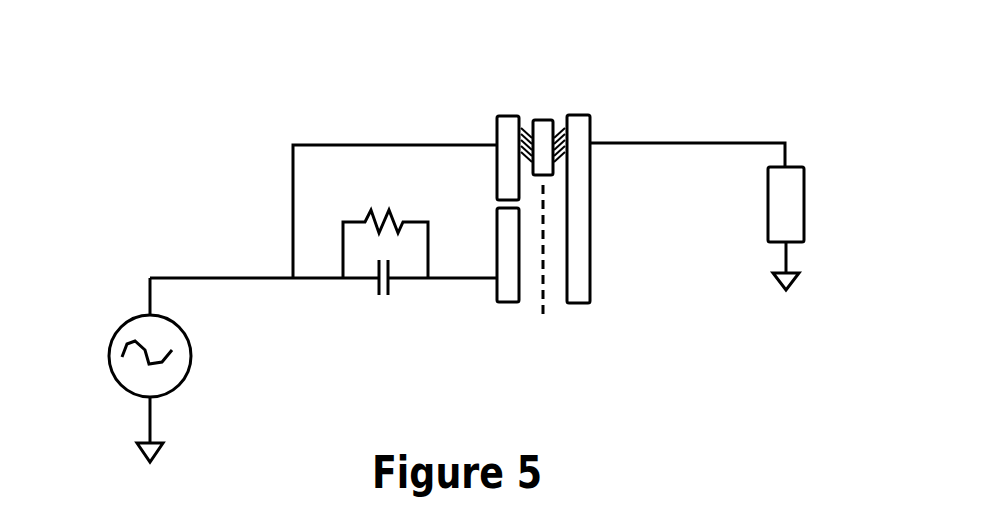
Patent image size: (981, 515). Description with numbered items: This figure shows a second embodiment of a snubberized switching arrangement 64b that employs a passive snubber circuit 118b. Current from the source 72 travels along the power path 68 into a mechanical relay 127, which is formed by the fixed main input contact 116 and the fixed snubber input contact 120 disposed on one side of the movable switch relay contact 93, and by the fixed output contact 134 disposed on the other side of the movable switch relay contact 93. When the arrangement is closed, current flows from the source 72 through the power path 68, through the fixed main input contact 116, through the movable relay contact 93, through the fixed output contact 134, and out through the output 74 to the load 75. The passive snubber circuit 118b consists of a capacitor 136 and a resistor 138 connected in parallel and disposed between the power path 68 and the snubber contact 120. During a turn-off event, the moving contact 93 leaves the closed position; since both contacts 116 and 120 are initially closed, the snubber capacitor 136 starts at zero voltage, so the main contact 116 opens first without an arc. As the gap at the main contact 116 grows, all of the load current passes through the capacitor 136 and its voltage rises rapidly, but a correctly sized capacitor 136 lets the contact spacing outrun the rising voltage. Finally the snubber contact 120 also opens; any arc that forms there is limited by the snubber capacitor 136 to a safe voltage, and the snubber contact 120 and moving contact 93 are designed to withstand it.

The snubberized switching arrangement 64b is at (283, 99).
The power path 68 is at (224, 278).
The source 72 is at (101, 300).
The passive snubber circuit 118b is at (362, 304).
The resistor 138 is at (392, 202).
The capacitor 136 is at (385, 294).
The fixed main input contact 116 is at (508, 125).
The fixed snubber input contact 120 is at (507, 302).
The movable switch relay contact 93 is at (543, 120).
The fixed output contact 134 is at (582, 128).
The mechanical relay 127 is at (616, 333).
The output 74 is at (739, 143).
The load 75 is at (785, 203).